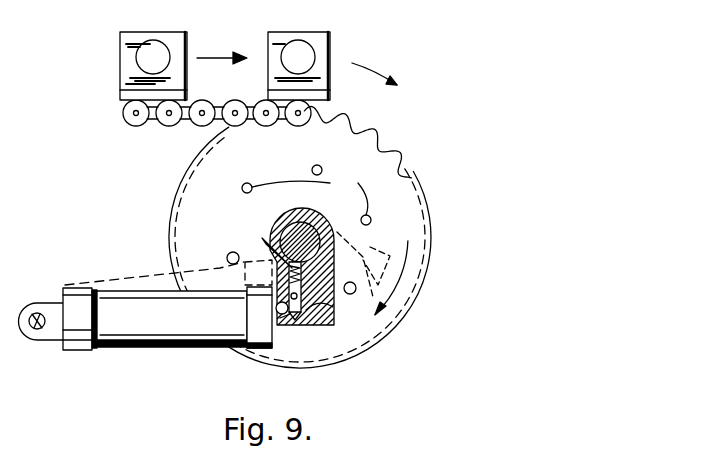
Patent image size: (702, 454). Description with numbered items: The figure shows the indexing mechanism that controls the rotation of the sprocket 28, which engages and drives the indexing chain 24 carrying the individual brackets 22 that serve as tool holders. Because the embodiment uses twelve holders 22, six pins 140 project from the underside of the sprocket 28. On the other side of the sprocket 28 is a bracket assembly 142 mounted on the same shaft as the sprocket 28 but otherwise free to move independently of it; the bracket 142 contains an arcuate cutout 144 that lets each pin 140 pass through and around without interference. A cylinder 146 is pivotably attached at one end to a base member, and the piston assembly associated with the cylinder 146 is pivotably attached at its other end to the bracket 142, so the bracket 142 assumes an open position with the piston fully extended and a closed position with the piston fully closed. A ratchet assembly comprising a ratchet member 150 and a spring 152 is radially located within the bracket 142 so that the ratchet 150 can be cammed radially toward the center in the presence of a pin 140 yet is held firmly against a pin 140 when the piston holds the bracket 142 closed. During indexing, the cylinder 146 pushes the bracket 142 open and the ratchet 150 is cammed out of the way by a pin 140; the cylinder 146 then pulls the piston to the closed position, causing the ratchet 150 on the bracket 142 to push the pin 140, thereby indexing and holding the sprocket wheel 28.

The bracket 22 is at (178, 24).
The indexing chain 24 is at (133, 127).
The sprocket 28 is at (427, 243).
The pin 140 is at (323, 170).
The bracket assembly 142 is at (320, 328).
The arcuate cutout 144 is at (308, 318).
The cylinder 146 is at (179, 346).
The ratchet member 150 is at (312, 303).
The spring 152 is at (263, 239).